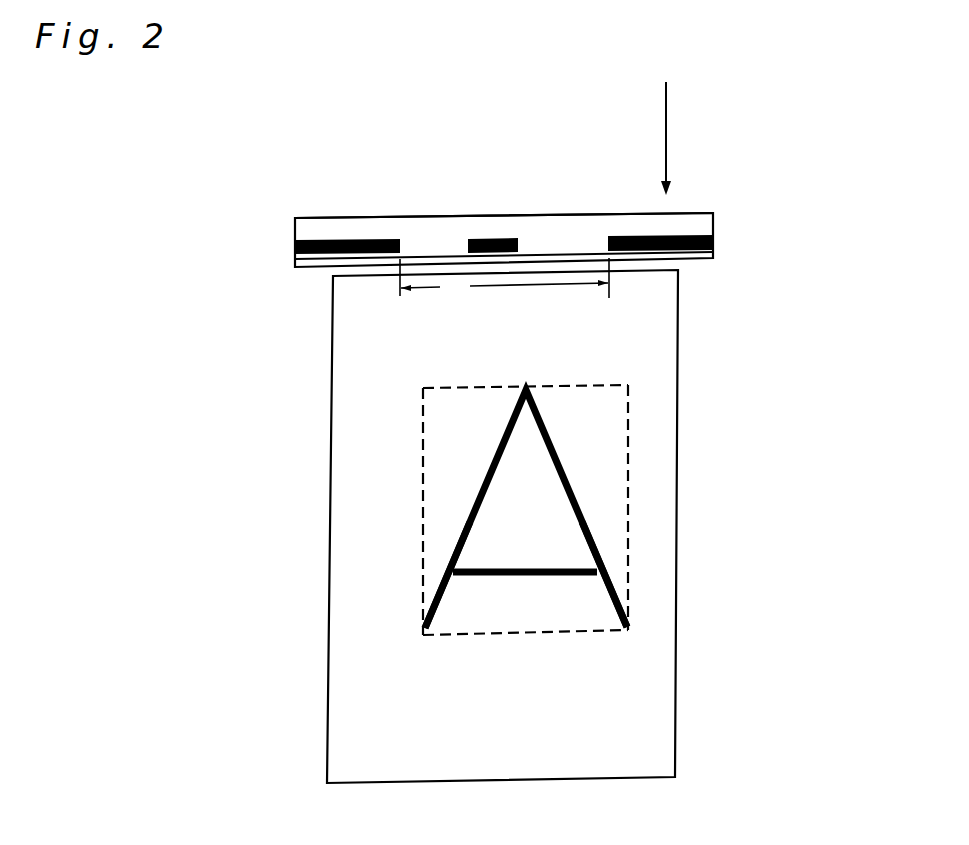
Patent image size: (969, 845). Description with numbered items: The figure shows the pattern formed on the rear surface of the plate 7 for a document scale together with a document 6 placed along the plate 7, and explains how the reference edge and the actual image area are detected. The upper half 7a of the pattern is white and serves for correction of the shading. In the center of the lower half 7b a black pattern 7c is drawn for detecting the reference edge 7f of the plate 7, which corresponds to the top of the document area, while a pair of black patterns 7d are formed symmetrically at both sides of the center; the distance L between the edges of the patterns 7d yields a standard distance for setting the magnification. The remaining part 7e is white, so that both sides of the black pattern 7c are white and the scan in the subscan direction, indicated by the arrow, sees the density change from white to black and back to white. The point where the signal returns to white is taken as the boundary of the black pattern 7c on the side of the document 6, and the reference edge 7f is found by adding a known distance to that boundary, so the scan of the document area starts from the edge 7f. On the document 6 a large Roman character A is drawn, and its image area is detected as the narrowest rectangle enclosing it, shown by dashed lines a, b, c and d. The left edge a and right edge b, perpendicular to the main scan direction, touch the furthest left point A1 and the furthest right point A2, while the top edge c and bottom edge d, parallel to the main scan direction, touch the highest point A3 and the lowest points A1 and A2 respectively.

The plate 7 is at (387, 212).
The upper half of the pattern 7a is at (688, 222).
The lower half of the pattern 7b is at (700, 252).
The black pattern 7c is at (497, 236).
The black patterns 7d is at (349, 240).
The remaining part 7e is at (414, 252).
The reference edge 7f is at (560, 261).
The distance L is at (504, 279).
The document 6 is at (320, 370).
The dashed line (left edge) a is at (416, 552).
The dashed line (right edge) b is at (634, 532).
The dashed line (top edge) c is at (570, 376).
The dashed line (bottom edge) d is at (538, 645).
The furthest left point A1 is at (421, 636).
The furthest right point A2 is at (626, 636).
The highest point A3 is at (527, 390).